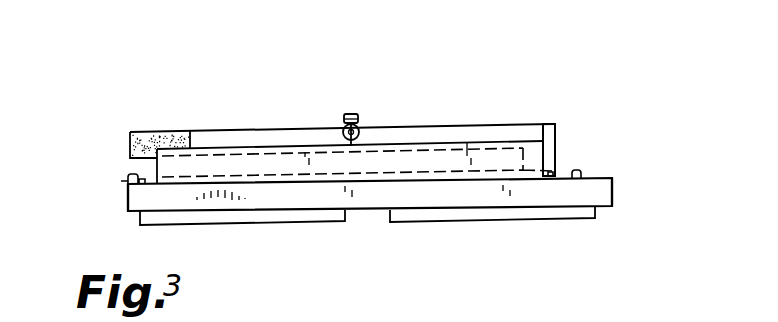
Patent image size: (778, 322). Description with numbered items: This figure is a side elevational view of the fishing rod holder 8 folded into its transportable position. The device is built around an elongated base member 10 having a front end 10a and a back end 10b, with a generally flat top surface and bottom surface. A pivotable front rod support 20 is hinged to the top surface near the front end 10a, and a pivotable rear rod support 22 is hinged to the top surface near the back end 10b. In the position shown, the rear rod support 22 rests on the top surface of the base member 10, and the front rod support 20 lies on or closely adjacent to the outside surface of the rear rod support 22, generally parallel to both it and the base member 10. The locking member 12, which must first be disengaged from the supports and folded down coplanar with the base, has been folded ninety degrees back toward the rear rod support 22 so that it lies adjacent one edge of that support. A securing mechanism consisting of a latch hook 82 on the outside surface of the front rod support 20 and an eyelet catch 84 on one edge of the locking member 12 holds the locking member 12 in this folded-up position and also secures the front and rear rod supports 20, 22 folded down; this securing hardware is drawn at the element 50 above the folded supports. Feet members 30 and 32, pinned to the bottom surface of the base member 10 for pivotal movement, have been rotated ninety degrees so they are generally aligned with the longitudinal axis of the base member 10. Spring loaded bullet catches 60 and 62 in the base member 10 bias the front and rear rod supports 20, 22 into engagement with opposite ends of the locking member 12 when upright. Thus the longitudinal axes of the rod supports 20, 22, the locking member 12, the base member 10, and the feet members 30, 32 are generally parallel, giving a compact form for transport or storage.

The rod holder 8 is at (620, 99).
The base member 10 is at (590, 192).
The front end 10a is at (613, 188).
The back end 10b is at (140, 204).
The locking member 12 is at (543, 133).
The front rod support 20 is at (268, 131).
The rear rod support 22 is at (447, 164).
The feet member 30 is at (544, 212).
The feet member 32 is at (302, 214).
The fastener 50 is at (385, 99).
The bullet catch 60 is at (577, 170).
The bullet catch 62 is at (135, 177).
The latch hook 82 is at (346, 128).
The eyelet catch 84 is at (362, 131).